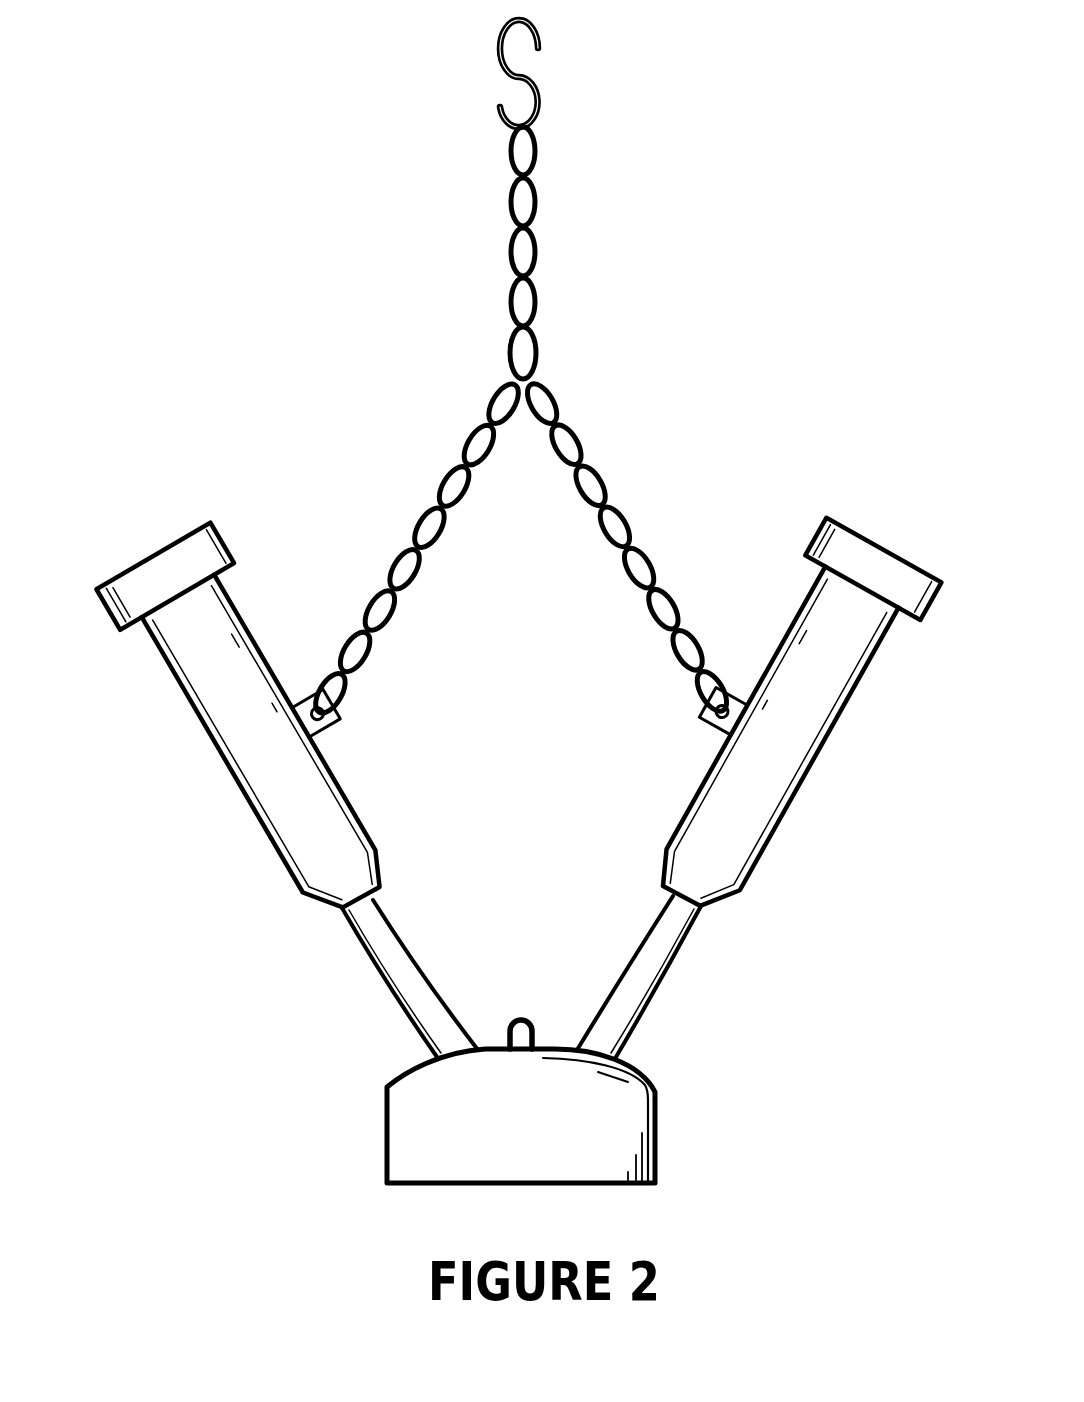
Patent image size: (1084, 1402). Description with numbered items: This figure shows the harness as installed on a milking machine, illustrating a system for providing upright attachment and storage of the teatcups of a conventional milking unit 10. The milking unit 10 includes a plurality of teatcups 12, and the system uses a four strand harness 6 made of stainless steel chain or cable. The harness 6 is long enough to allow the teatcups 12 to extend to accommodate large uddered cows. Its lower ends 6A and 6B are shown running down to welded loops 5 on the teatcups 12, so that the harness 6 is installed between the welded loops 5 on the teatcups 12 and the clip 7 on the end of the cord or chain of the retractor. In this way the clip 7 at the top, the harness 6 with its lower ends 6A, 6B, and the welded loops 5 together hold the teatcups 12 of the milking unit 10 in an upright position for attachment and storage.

The welded loops 5 is at (340, 718).
The four strand harness 6 is at (507, 320).
The lower end of harness 6A is at (593, 468).
The lower end of harness 6B is at (428, 513).
The clip 7 is at (538, 88).
The milking unit 10 is at (558, 1048).
The teatcups 12 is at (212, 743).